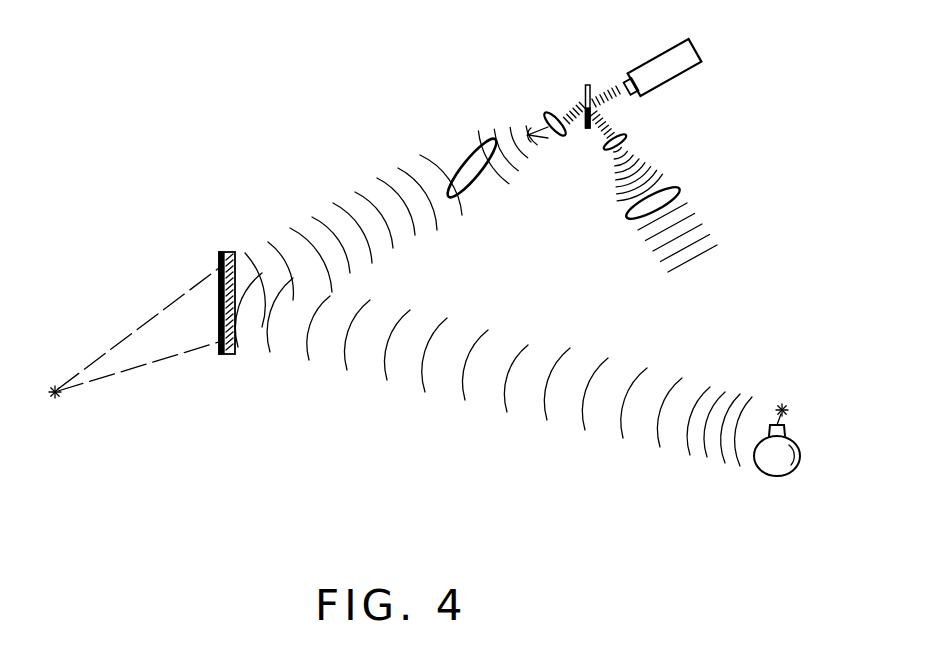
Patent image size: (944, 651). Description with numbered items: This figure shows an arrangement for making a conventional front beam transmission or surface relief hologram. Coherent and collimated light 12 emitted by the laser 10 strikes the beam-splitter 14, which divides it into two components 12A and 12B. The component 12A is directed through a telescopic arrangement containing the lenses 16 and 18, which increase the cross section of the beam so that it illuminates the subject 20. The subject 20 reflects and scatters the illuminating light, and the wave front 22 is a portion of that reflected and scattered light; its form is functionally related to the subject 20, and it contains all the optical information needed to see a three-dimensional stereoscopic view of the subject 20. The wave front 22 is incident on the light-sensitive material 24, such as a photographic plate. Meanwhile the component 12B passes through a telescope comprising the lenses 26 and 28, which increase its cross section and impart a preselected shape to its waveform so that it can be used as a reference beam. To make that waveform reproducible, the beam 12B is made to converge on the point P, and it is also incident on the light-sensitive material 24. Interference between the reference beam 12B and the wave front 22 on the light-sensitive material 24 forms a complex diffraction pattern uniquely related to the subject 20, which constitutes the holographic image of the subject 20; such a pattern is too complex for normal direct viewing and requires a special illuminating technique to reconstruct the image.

The laser 10 is at (693, 47).
The coherent and collimated light 12 is at (604, 90).
The component of light 12A is at (598, 117).
The component of light 12B is at (560, 110).
The beam-splitter 14 is at (590, 82).
The lens 16 is at (624, 139).
The lens 18 is at (676, 188).
The subject 20 is at (776, 473).
The wave front 22 is at (530, 344).
The light-sensitive material 24 is at (227, 356).
The lens 26 is at (557, 151).
The lens 28 is at (450, 157).
The point P is at (53, 388).